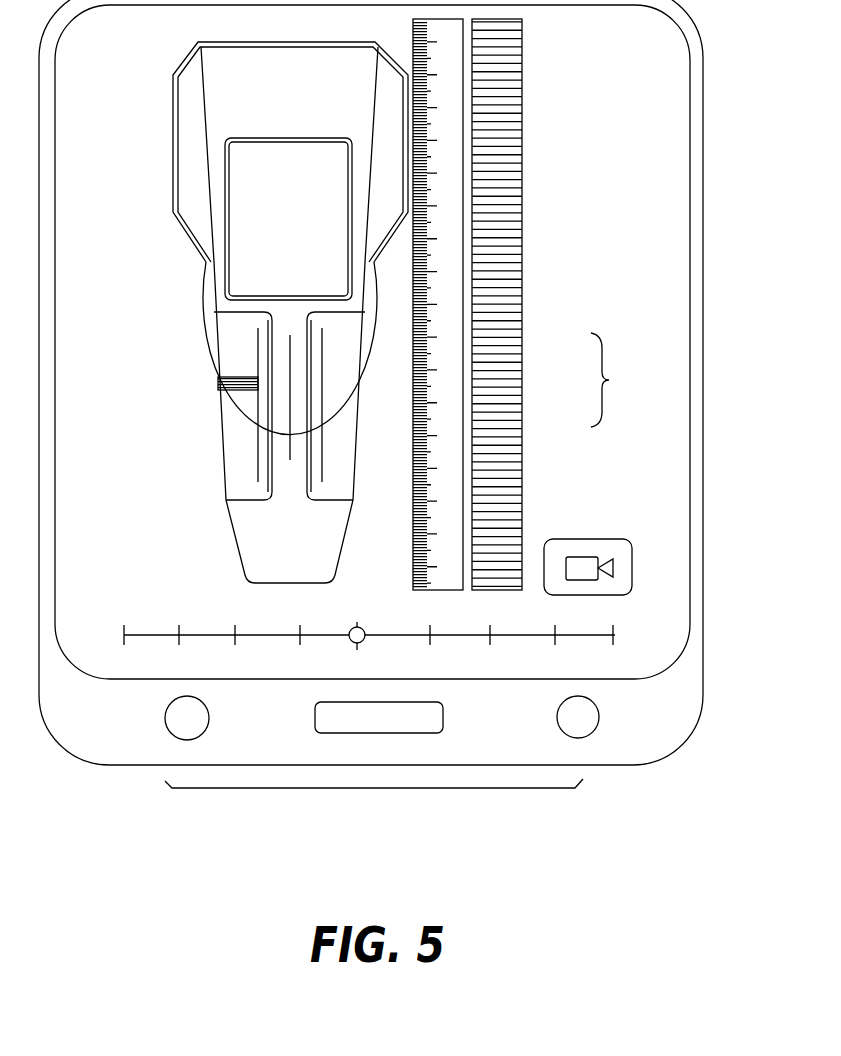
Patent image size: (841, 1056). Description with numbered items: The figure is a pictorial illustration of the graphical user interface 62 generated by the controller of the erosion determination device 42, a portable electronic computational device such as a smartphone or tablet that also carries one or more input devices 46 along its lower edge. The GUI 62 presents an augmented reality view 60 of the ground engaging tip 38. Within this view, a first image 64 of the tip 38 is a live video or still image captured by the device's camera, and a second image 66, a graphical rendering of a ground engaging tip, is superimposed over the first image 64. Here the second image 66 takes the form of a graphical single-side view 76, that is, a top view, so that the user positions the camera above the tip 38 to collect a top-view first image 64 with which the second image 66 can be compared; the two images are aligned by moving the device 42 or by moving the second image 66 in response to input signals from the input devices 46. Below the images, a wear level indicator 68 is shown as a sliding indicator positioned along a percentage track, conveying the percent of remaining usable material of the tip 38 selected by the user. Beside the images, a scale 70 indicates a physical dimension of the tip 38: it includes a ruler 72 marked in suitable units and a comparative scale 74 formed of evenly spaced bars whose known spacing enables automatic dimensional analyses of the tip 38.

The erosion determination device 42 is at (690, 737).
The graphical user interface 62 is at (621, 136).
The augmented reality view 60 is at (144, 130).
The graphical single-side view 76 is at (177, 292).
The first image 64 is at (225, 457).
The second image 66 is at (237, 407).
The tip 38 is at (280, 540).
The wear level indicator 68 is at (207, 614).
The ruler 72 is at (447, 427).
The comparative scale 74 is at (488, 361).
The scale 70 is at (609, 380).
The input device 46 is at (372, 789).